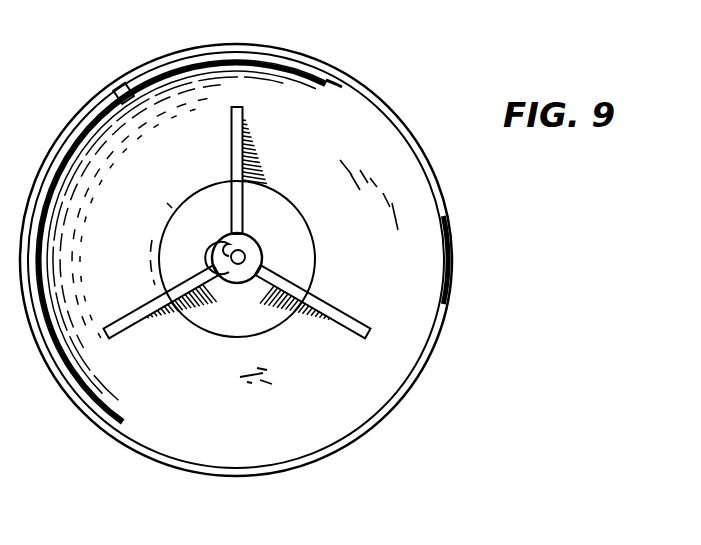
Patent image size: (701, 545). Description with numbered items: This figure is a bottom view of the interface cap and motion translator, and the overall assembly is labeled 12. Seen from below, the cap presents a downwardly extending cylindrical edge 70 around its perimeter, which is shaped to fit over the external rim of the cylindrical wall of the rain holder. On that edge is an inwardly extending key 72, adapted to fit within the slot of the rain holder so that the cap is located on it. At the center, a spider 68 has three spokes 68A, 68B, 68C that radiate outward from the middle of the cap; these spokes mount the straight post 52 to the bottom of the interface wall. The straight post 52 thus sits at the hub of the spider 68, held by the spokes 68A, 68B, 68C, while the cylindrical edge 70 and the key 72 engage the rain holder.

The stirring device 12 is at (153, 32).
The downwardly extending cylindrical edge 70 is at (446, 195).
The inwardly extending key 72 is at (118, 92).
The spider 68 is at (238, 232).
The spoke 68A is at (244, 141).
The spoke 68B is at (344, 308).
The spoke 68C is at (144, 310).
The straight post 52 is at (250, 243).